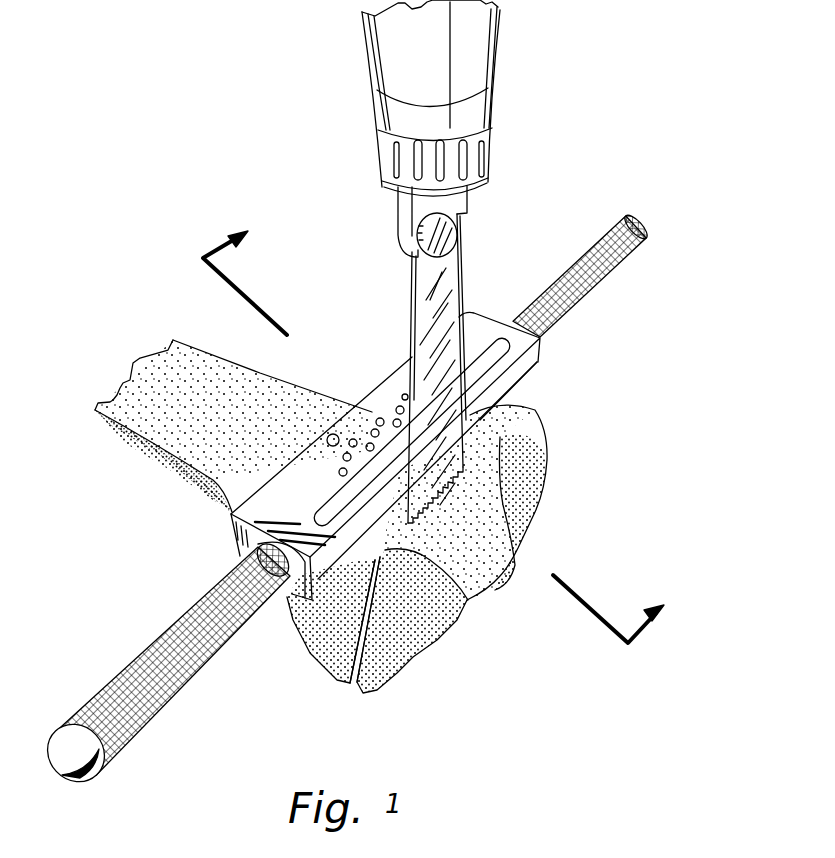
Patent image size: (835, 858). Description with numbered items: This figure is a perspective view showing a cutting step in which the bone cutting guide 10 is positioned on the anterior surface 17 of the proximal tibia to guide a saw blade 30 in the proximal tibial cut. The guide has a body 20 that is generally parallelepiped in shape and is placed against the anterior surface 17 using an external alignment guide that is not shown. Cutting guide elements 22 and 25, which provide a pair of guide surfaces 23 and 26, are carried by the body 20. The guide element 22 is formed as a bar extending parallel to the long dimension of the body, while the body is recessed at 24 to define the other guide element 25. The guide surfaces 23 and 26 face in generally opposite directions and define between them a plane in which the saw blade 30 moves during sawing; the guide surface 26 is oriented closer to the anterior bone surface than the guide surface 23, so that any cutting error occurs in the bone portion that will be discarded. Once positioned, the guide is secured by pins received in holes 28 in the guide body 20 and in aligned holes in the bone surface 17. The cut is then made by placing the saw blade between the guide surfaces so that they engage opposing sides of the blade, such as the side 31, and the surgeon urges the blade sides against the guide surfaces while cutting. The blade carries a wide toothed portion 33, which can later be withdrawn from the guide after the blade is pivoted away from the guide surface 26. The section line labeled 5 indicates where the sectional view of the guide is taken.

The section line 5- 5 is at (444, 420).
The bone cutting guide 10 is at (376, 456).
The anterior surface of the proximal tibia 17 is at (240, 397).
The body 20 is at (255, 542).
The cutting guide element 22 is at (523, 345).
The guide surface 23 is at (413, 556).
The recess 24 is at (465, 368).
The cutting guide element 25 is at (532, 374).
The guide surface 26 is at (297, 619).
The holes 28 is at (405, 394).
The saw blade 30 is at (471, 368).
The side of the saw blade 31 is at (433, 305).
The wide toothed portion 33 is at (452, 487).